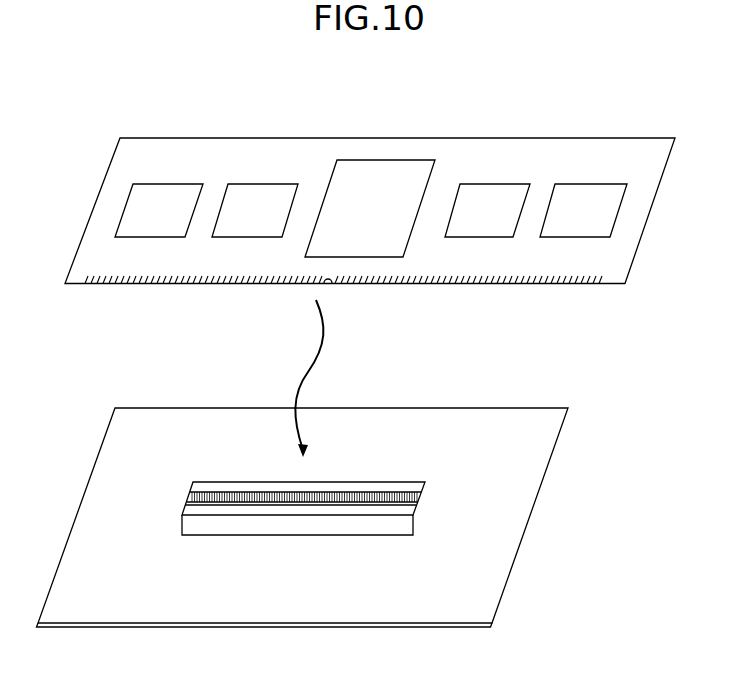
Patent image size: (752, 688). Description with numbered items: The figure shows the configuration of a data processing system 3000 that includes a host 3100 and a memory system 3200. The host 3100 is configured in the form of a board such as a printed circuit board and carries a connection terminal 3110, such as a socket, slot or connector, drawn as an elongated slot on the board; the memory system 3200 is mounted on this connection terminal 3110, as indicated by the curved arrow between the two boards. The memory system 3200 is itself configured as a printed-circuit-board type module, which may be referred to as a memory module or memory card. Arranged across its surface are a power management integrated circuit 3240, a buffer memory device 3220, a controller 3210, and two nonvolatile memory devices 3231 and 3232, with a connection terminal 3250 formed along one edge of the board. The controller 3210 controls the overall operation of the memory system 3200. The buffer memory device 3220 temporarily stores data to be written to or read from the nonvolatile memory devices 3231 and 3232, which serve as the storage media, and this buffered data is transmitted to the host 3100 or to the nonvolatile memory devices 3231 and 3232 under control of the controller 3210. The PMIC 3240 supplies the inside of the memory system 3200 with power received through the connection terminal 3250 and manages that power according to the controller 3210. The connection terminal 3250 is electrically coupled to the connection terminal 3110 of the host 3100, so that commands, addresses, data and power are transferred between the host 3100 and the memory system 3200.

The data processing system 3000 is at (221, 103).
The memory system 3200 is at (370, 233).
The power management integrated circuit 3240 is at (159, 210).
The buffer memory device 3220 is at (255, 210).
The controller 3210 is at (370, 208).
The nonvolatile memory device 3231 is at (487, 210).
The nonvolatile memory device 3232 is at (583, 210).
The connection terminal 3250 is at (102, 284).
The host 3100 is at (303, 517).
The connection terminal 3110 is at (443, 477).